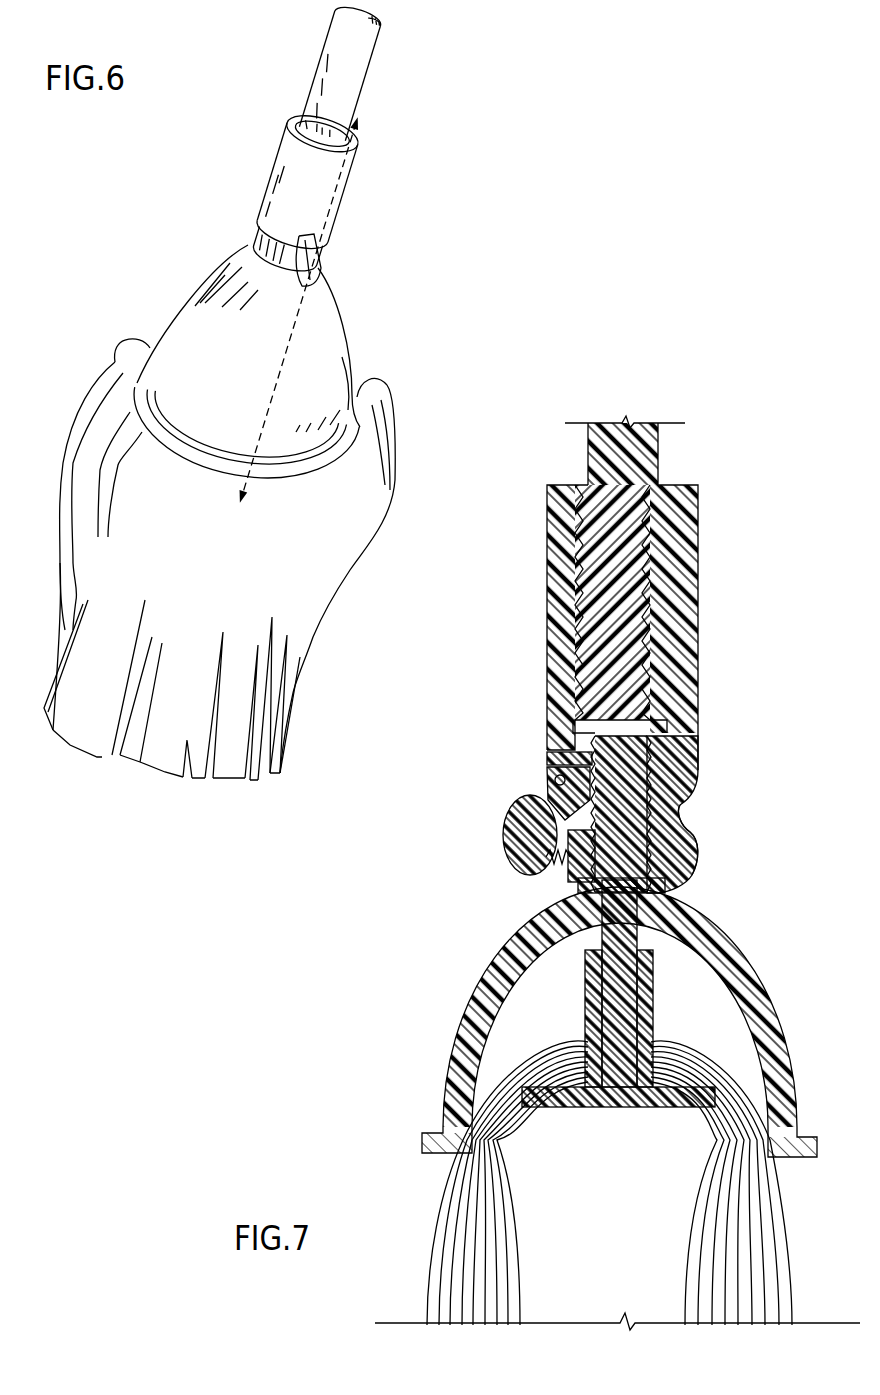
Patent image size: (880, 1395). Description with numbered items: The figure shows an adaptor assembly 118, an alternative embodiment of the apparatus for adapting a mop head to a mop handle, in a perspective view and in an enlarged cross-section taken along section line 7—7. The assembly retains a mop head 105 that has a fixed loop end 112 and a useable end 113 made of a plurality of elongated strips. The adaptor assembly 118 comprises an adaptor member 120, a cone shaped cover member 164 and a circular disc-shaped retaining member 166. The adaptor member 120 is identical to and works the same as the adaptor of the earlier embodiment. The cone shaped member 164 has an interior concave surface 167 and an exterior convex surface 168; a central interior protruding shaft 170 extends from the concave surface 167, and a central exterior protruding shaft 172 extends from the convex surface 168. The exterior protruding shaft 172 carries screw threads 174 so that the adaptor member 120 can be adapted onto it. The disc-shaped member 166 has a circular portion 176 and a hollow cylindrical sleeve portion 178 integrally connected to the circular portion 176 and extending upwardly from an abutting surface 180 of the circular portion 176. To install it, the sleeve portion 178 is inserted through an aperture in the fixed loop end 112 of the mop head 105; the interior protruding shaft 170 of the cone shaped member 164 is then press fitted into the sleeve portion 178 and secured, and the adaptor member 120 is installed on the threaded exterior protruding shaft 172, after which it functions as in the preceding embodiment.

In FIG. 6, the section line 7— 7 is at (364, 123).
In FIG. 6, the mop head 105 is at (307, 660).
In FIG. 6, the fixed loop end 112 is at (373, 397).
In FIG. 7, the fixed loop end 112 is at (660, 1038).
In FIG. 6, the useable end 113 is at (221, 784).
In FIG. 6, the adaptor assembly 118 is at (131, 228).
In FIG. 6, the adaptor member 120 is at (264, 167).
In FIG. 7, the adaptor member 120 is at (706, 596).
In FIG. 6, the cone shaped cover member 164 is at (326, 323).
In FIG. 7, the cone shaped cover member 164 is at (630, 1022).
In FIG. 7, the circular disc-shaped retaining member 166 is at (631, 1142).
In FIG. 7, the interior concave surface 167 is at (487, 1008).
In FIG. 7, the exterior convex surface 168 is at (760, 975).
In FIG. 7, the central interior protruding shaft 170 is at (648, 940).
In FIG. 7, the central exterior protruding shaft 172 is at (692, 773).
In FIG. 7, the screw threads 174 is at (692, 834).
In FIG. 7, the circular portion 176 is at (546, 1108).
In FIG. 7, the hollow cylindrical sleeve portion 178 is at (584, 960).
In FIG. 7, the abutting surface 180 is at (676, 1098).